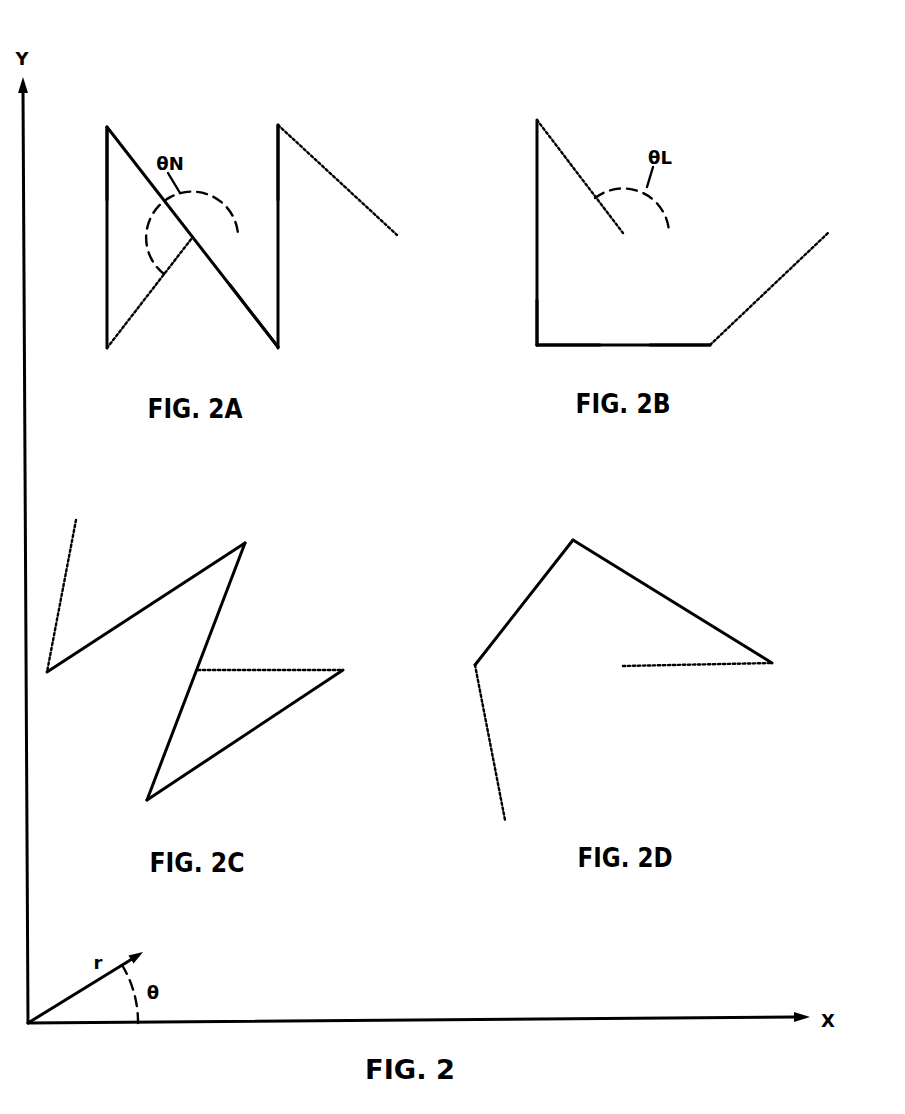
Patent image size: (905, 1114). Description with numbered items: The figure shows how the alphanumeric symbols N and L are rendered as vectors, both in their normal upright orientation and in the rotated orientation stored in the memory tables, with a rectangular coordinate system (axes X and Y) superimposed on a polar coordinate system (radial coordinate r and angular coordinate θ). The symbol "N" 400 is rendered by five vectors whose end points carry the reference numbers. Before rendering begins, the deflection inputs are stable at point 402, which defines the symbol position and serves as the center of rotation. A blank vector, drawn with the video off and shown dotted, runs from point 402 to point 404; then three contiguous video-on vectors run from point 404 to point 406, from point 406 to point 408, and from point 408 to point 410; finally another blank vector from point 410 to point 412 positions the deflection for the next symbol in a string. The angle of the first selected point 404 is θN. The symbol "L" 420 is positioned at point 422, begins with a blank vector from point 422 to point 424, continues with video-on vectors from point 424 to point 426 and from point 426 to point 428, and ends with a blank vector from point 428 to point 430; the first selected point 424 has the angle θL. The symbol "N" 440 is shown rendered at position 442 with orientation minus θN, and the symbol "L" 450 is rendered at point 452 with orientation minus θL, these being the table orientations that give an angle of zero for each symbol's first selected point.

In FIG. 2A, the symbol "N" 400 is at (217, 115).
In FIG. 2A, the point 402 is at (192, 250).
In FIG. 2A, the point 404 is at (100, 352).
In FIG. 2A, the point 406 is at (105, 127).
In FIG. 2A, the point 408 is at (282, 348).
In FIG. 2A, the point 410 is at (287, 122).
In FIG. 2A, the point 412 is at (405, 227).
In FIG. 2B, the symbol "L" 420 is at (713, 112).
In FIG. 2B, the point 422 is at (618, 238).
In FIG. 2B, the point 424 is at (543, 118).
In FIG. 2B, the point 426 is at (532, 347).
In FIG. 2B, the point 428 is at (703, 338).
In FIG. 2B, the point 430 is at (822, 228).
In FIG. 2C, the symbol "N" 440 is at (290, 567).
In FIG. 2C, the position 442 is at (183, 673).
In FIG. 2D, the symbol "L" 450 is at (667, 567).
In FIG. 2D, the point 452 is at (613, 663).